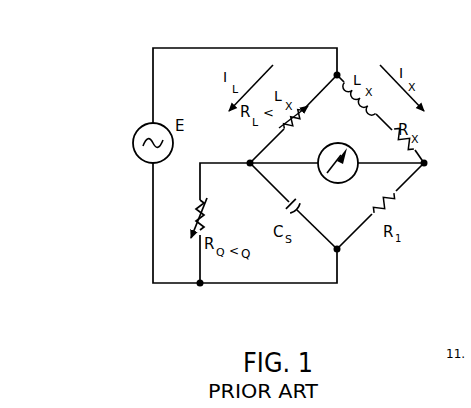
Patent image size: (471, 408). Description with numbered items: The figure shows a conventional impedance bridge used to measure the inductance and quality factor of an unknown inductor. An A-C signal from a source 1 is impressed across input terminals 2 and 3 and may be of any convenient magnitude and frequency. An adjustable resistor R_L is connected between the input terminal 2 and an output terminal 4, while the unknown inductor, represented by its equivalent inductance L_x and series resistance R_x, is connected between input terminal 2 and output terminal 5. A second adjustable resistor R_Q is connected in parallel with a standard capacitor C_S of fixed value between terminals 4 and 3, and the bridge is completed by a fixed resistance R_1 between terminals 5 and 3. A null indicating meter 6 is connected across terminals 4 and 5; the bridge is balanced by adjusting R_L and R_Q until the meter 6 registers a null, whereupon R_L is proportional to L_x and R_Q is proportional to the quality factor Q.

The A-C signal source 1 is at (133, 139).
The input terminal 2 is at (327, 69).
The input terminal 3 is at (345, 260).
The output terminal 4 is at (240, 155).
The output terminal 5 is at (430, 157).
The null indicating meter 6 is at (354, 178).